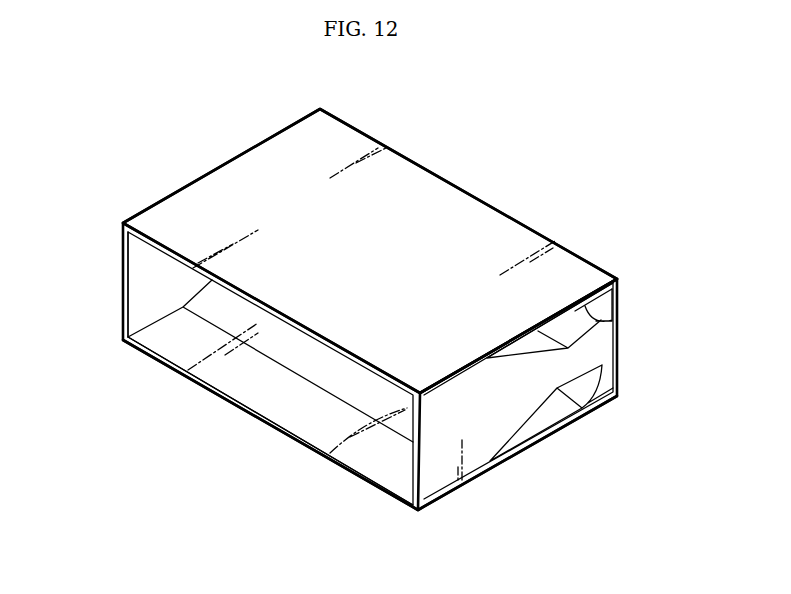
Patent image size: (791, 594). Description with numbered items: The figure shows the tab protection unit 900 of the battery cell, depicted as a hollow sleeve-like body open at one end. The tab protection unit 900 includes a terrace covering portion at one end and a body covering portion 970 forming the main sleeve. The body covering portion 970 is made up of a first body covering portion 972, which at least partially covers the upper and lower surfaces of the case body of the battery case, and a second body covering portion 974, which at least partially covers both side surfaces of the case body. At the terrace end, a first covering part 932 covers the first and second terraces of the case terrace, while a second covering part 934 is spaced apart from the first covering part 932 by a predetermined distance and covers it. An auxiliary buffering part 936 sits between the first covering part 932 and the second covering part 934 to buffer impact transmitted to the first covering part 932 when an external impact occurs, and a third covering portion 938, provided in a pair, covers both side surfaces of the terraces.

The tab protection unit 900 is at (184, 147).
The first body covering portion 972 is at (146, 221).
The second body covering portion 974 is at (135, 292).
The second covering part 934 is at (507, 232).
The first covering part 932 is at (538, 345).
The auxiliary buffering part 936 is at (612, 315).
The third covering portion 938 is at (492, 427).
The body covering portion 970 is at (437, 516).